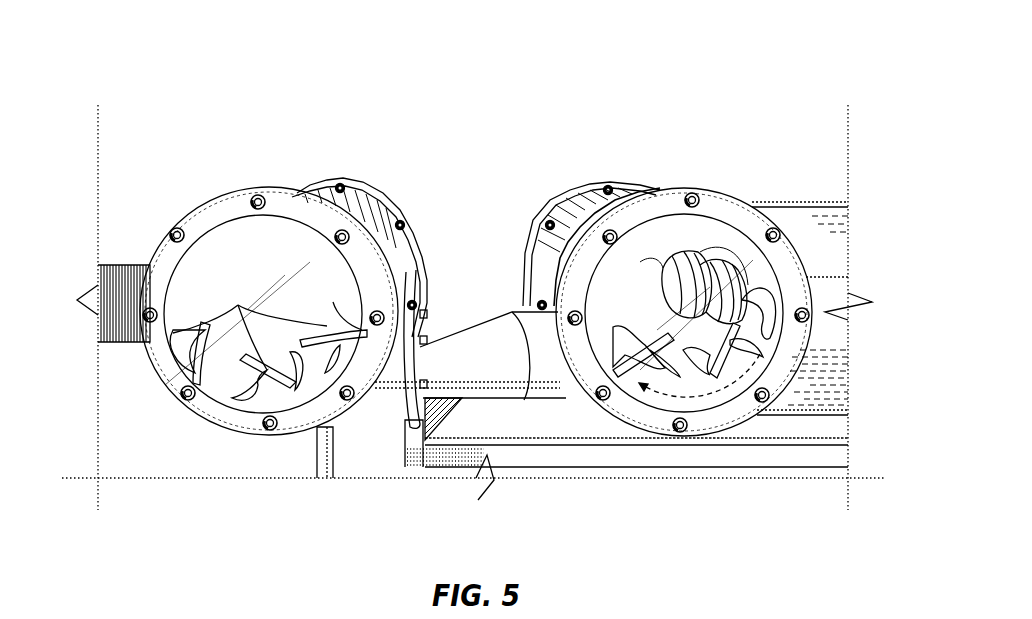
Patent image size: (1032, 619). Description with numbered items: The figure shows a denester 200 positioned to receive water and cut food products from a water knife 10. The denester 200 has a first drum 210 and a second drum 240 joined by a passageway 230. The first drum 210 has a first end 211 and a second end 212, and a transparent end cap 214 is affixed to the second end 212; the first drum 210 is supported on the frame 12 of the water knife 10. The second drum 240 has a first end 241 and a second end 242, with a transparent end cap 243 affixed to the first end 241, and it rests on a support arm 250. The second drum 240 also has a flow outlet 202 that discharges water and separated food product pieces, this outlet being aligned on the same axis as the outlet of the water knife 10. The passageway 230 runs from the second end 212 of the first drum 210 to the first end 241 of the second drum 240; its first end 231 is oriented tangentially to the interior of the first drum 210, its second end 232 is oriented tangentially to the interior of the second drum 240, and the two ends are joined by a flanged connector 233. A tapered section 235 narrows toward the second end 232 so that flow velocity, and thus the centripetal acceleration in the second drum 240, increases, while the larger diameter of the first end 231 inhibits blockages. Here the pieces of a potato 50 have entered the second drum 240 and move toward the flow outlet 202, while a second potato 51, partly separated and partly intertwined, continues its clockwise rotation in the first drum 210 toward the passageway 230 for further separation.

The denester 200 is at (806, 90).
The water knife 10 is at (807, 210).
The frame 12 is at (833, 453).
The potato 50 is at (245, 300).
The second potato 51 is at (660, 277).
The flow outlet 202 is at (112, 342).
The first drum 210 is at (600, 213).
The first end 211 is at (547, 223).
The second end 212 is at (713, 198).
The transparent end cap 214 is at (687, 233).
The passageway 230 is at (490, 284).
The first end 231 is at (537, 395).
The second end 232 is at (388, 392).
The flanged connector 233 is at (428, 412).
The tapered section 235 is at (470, 337).
The second drum 240 is at (355, 212).
The first end 241 is at (216, 205).
The second end 242 is at (412, 223).
The transparent end cap 243 is at (178, 275).
The support arm 250 is at (317, 472).